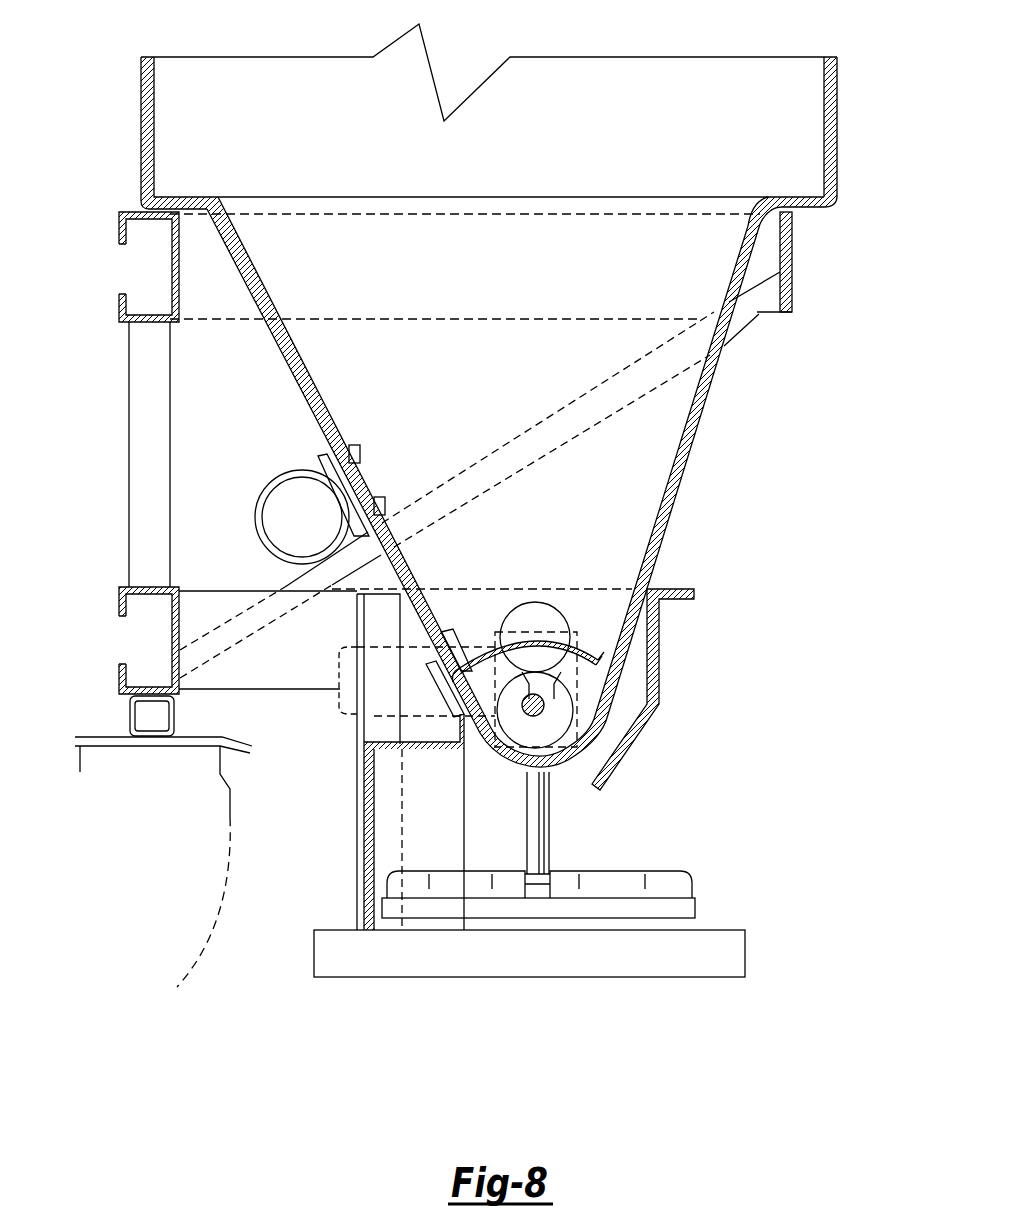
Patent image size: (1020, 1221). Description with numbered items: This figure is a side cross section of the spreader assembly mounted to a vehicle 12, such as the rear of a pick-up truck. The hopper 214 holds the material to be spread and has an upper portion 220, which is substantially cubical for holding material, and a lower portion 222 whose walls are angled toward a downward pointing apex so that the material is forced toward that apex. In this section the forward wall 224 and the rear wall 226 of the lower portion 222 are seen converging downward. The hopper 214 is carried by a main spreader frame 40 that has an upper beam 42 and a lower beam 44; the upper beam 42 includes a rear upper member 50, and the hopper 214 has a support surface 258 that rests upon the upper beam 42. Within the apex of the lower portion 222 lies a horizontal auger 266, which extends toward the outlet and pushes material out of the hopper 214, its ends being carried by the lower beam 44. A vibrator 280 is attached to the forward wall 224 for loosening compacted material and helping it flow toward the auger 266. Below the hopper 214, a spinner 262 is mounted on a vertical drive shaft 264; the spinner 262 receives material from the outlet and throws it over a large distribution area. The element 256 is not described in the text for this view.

The vehicle 12 is at (186, 926).
The main spreader frame 40 is at (399, 443).
The upper beam 42 is at (120, 303).
The lower beam 44 is at (118, 590).
The rear upper member 50 is at (790, 260).
The hopper 214 is at (835, 106).
The upper portion 220 is at (549, 150).
The lower portion 222 is at (700, 412).
The forward wall 224 is at (285, 366).
The rear wall 226 is at (663, 528).
The support bracket 256 is at (657, 639).
The support surface 258 is at (818, 220).
The spinner 262 is at (653, 867).
The vertical drive shaft 264 is at (548, 831).
The horizontal auger 266 is at (482, 662).
The vibrator 280 is at (283, 470).